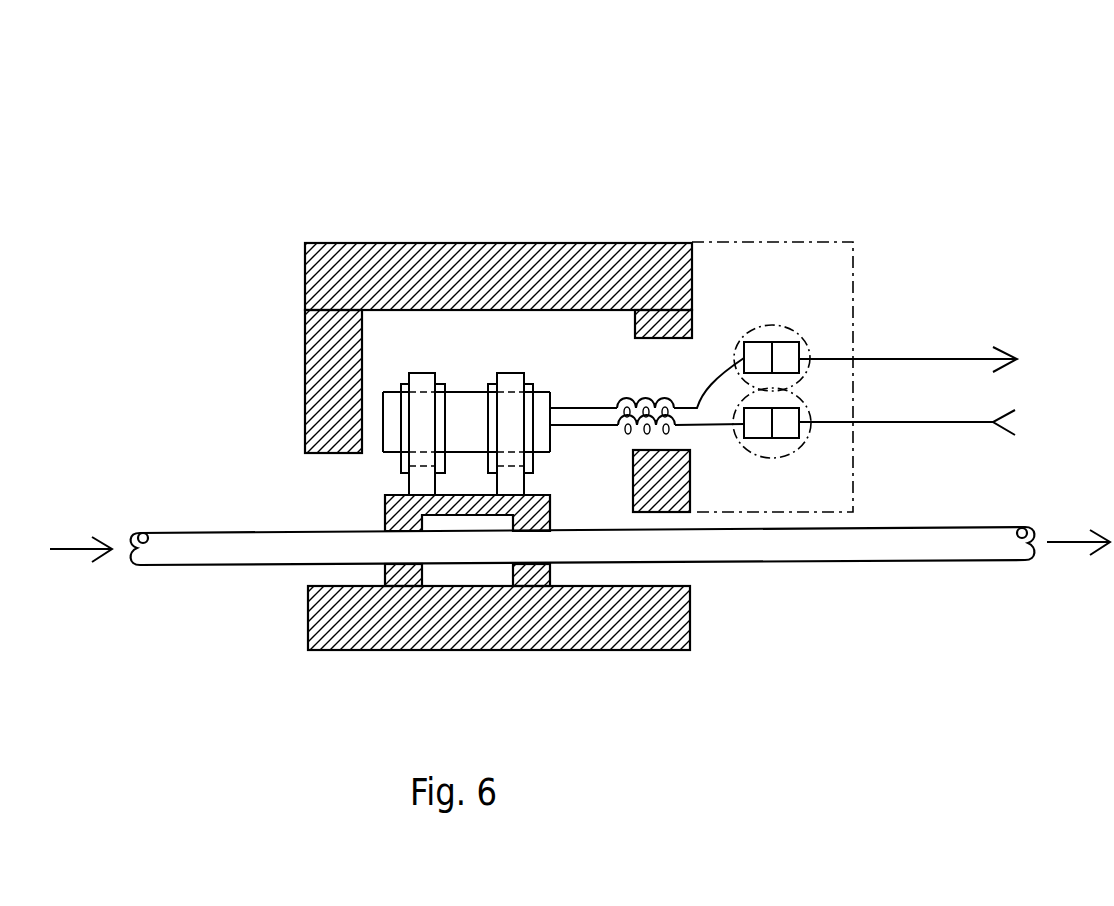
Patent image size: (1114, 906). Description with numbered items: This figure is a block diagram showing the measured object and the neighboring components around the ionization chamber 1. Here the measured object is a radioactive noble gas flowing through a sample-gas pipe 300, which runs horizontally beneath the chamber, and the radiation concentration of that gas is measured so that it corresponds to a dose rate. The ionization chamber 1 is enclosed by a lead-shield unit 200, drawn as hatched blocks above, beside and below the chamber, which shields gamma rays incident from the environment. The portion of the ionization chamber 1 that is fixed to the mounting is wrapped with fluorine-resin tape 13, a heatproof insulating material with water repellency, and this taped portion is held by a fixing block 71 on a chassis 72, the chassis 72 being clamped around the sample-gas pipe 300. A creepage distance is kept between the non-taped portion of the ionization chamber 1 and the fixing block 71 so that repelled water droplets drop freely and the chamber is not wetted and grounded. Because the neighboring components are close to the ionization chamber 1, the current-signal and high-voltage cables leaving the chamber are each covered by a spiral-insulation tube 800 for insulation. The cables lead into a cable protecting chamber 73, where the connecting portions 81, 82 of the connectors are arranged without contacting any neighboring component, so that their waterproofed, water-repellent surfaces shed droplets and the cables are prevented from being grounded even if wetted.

The ionization chamber 1 is at (452, 392).
The fluorine-resin tape 13 is at (490, 384).
The fixing block 71 is at (514, 372).
The chassis 72 is at (549, 495).
The cable protecting chamber 73 is at (773, 238).
The connecting portion 81 is at (800, 342).
The connecting portion 82 is at (800, 410).
The lead-shield unit 200 is at (306, 350).
The sample-gas pipe 300 is at (205, 533).
The spiral-insulation tube 800 is at (662, 397).